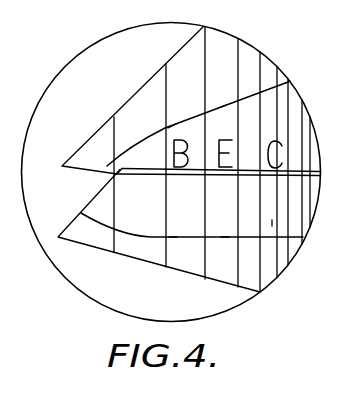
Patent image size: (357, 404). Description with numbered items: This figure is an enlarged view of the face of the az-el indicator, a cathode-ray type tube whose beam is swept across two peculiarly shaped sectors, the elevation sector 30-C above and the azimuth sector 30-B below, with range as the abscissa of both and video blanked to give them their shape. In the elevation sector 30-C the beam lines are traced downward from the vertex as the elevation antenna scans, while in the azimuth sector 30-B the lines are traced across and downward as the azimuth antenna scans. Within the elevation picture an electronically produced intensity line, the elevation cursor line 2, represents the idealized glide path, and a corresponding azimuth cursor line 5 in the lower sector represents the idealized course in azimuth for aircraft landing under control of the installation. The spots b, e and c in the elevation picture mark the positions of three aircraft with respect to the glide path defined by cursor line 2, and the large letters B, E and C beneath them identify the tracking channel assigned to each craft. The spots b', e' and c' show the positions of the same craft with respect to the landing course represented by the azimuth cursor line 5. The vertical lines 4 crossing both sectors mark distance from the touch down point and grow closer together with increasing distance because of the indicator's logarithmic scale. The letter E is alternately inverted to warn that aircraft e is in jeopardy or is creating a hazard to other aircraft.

The cursor line in elevation 2 is at (127, 148).
The vertical lines 4 is at (260, 293).
The lower partition line 5 is at (127, 236).
The elevation sector 30-C is at (75, 169).
The azimuth sector 30-B is at (155, 265).
The aircraft spot b is at (176, 105).
The aircraft spot e is at (221, 91).
The aircraft spot c is at (278, 63).
The aircraft spot b' is at (180, 222).
The aircraft spot c' is at (258, 213).
The aircraft spot e' is at (220, 255).